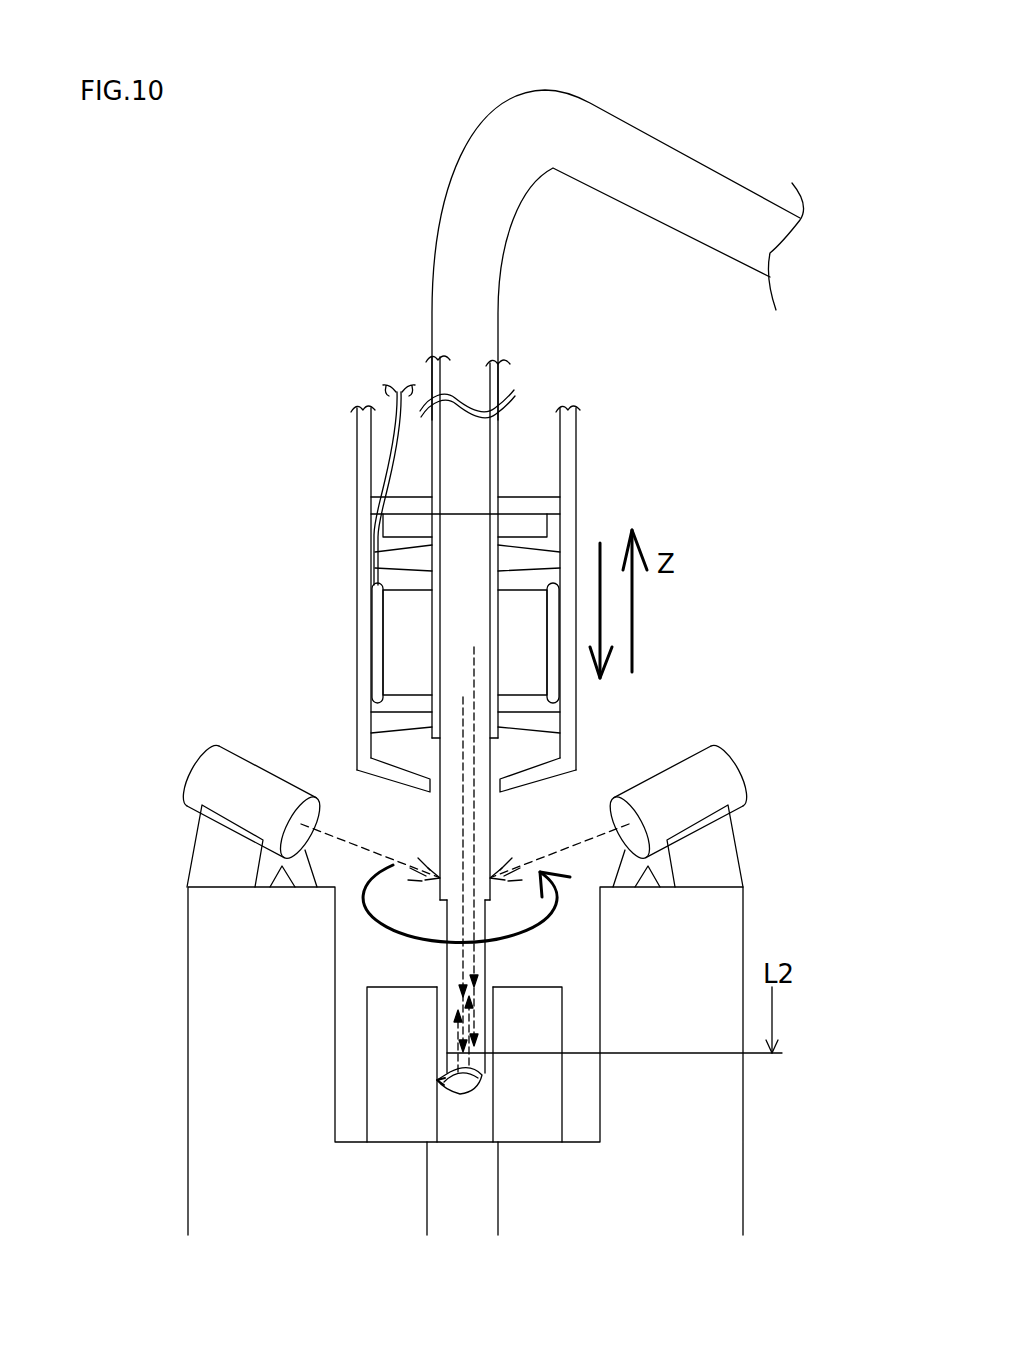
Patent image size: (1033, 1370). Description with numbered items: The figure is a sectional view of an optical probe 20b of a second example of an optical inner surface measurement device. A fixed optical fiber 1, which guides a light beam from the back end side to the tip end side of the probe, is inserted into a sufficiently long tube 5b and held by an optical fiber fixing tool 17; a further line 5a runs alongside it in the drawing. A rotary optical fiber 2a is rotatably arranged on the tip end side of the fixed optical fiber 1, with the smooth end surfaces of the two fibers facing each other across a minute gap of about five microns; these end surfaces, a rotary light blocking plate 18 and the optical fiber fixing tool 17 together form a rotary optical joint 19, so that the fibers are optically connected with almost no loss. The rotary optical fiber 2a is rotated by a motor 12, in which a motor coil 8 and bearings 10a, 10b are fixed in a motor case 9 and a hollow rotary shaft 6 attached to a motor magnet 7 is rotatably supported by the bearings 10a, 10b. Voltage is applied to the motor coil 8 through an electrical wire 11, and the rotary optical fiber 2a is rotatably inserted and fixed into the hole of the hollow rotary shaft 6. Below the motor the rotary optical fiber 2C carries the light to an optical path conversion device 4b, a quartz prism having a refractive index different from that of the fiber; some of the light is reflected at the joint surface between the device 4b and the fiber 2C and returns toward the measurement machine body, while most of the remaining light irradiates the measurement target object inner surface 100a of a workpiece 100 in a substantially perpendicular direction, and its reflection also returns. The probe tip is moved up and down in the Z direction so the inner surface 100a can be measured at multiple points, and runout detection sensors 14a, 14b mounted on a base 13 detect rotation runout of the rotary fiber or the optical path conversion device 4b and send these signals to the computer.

The fixed optical fiber 1 is at (465, 365).
The rotary optical fiber 2a is at (453, 631).
The rotary optical fiber 2C is at (482, 968).
The optical path conversion device 4b is at (478, 1077).
The cable 5a is at (498, 378).
The tube 5b is at (500, 225).
The hollow rotary shaft 6 is at (408, 607).
The motor magnet 7 is at (431, 579).
The motor coil 8 is at (371, 626).
The motor case 9 is at (357, 685).
The bearing 10a is at (371, 724).
The bearing 10b is at (412, 557).
The electrical wire 11 is at (397, 387).
The motor 12 is at (172, 702).
The holder base 13 is at (248, 1030).
The runout detection sensor 14a is at (224, 790).
The runout detection sensor 14b is at (718, 763).
The optical fiber fixing tool 17 is at (544, 499).
The rotary light blocking plate 18 is at (523, 527).
The rotary optical joint 19 is at (725, 428).
The optical probe 20b is at (262, 372).
The workpiece 100 is at (400, 1065).
The measurement target object inner surface 100a is at (437, 1113).